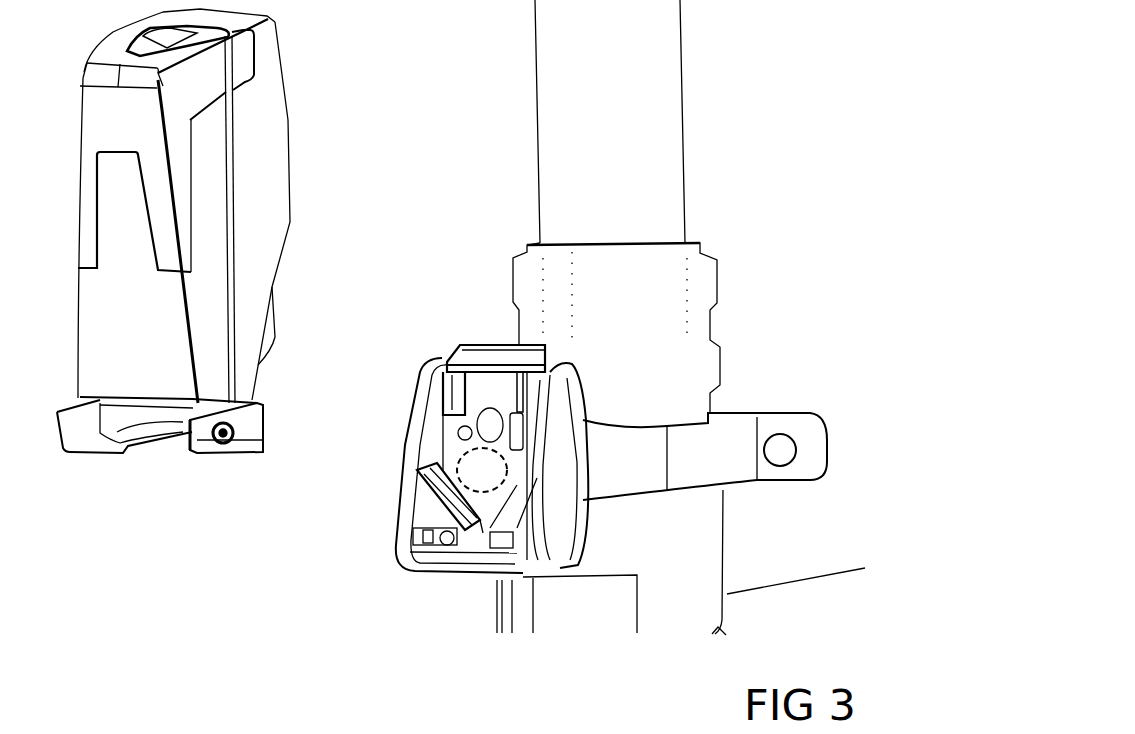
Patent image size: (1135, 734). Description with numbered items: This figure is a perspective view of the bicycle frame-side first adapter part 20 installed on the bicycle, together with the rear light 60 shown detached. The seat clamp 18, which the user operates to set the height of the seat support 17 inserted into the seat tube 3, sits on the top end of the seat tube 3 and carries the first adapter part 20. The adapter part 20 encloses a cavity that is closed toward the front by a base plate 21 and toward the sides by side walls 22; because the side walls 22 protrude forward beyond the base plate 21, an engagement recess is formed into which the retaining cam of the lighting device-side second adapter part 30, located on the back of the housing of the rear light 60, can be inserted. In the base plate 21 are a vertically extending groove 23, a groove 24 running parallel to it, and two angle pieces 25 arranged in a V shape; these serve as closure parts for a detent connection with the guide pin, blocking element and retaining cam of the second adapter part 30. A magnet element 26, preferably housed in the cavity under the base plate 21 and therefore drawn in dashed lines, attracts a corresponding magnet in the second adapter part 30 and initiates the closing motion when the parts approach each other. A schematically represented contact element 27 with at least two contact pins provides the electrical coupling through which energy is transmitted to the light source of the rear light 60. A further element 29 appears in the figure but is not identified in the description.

The seat tube 3 is at (710, 562).
The seat support 17 is at (648, 108).
The seat clamp 18 is at (792, 374).
The first adapter part 20 is at (492, 430).
The base plate 21 is at (482, 393).
The side walls 22 is at (410, 468).
The vertically extending groove 23 is at (462, 394).
The groove 24 is at (425, 540).
The angle pieces 25 is at (437, 508).
The magnet element 26 is at (483, 473).
The contact element 27 is at (522, 436).
The mounting plate 29 is at (435, 438).
The second adapter part 30 is at (290, 333).
The rear light 60 is at (308, 113).